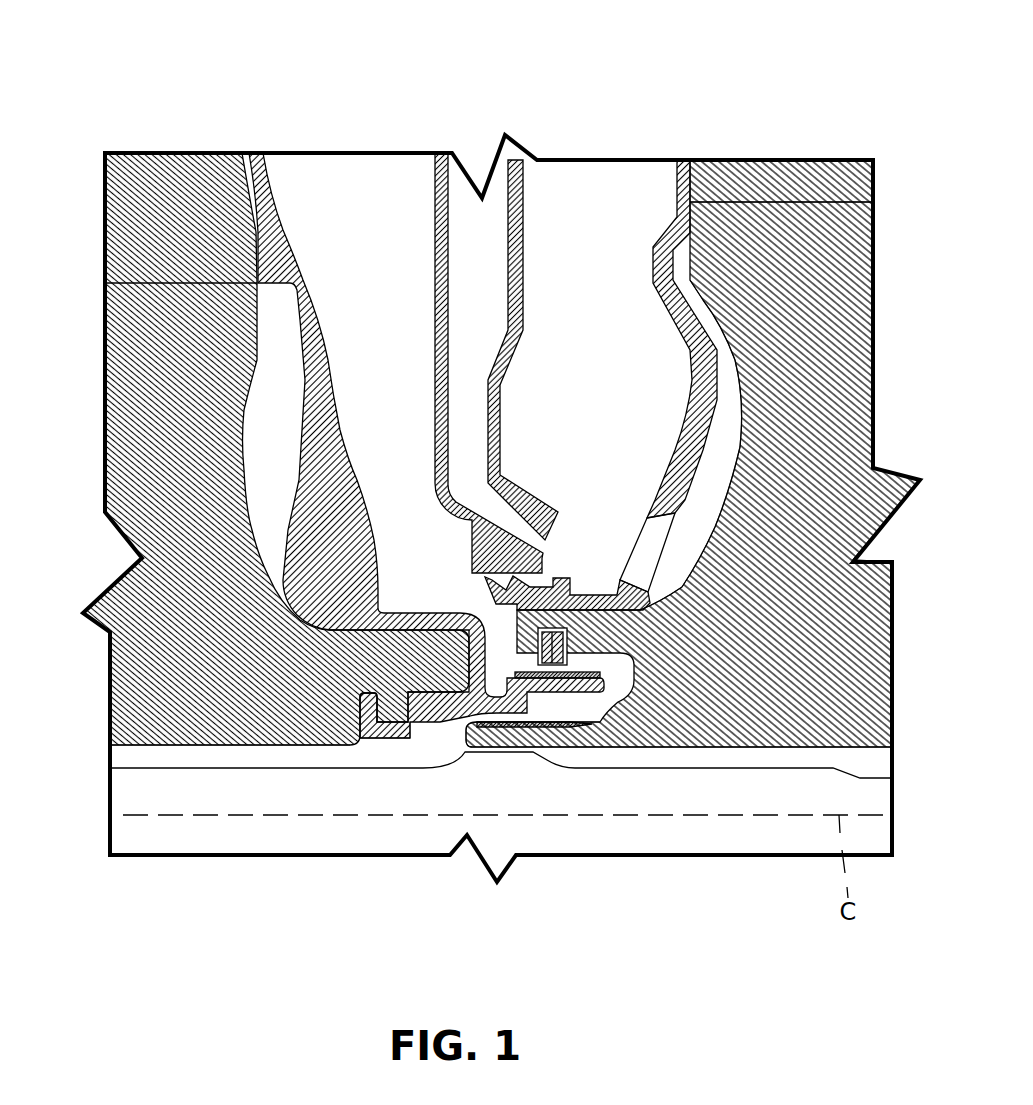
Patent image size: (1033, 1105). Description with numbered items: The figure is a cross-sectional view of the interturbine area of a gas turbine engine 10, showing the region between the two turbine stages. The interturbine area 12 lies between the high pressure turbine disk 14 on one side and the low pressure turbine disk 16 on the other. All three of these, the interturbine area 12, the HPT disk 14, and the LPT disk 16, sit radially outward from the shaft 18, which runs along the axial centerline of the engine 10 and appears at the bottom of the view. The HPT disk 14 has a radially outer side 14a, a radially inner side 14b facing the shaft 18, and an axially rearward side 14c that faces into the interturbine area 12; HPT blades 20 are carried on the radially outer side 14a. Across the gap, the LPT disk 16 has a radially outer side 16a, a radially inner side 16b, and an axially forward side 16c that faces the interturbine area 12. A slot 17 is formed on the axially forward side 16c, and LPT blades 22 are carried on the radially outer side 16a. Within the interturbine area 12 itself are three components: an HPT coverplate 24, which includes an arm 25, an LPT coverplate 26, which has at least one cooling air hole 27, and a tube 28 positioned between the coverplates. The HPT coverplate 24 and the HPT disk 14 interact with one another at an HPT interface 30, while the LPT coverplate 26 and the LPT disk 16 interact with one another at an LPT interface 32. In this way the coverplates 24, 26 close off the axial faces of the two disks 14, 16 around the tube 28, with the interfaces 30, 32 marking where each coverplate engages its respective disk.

The gas turbine engine 10 is at (167, 96).
The interturbine area 12 is at (497, 289).
The high pressure turbine disk 14 is at (148, 466).
The radially outer side 14a is at (127, 255).
The radially inner side 14b is at (146, 720).
The axially rearward side 14c is at (253, 527).
The low pressure turbine disk 16 is at (840, 435).
The radially outer side 16a is at (842, 190).
The radially inner side 16b is at (833, 710).
The axially forward side 16c is at (720, 512).
The slot 17 is at (642, 706).
The shaft 18 is at (160, 790).
The HPT blades 20 is at (174, 218).
The LPT blades 22 is at (800, 178).
The HPT coverplate 24 is at (259, 232).
The arm 25 is at (593, 683).
The LPT coverplate 26 is at (675, 217).
The cooling air hole 27 is at (653, 543).
The tube 28 is at (521, 182).
The HPT interface 30 is at (369, 760).
The LPT interface 32 is at (607, 637).